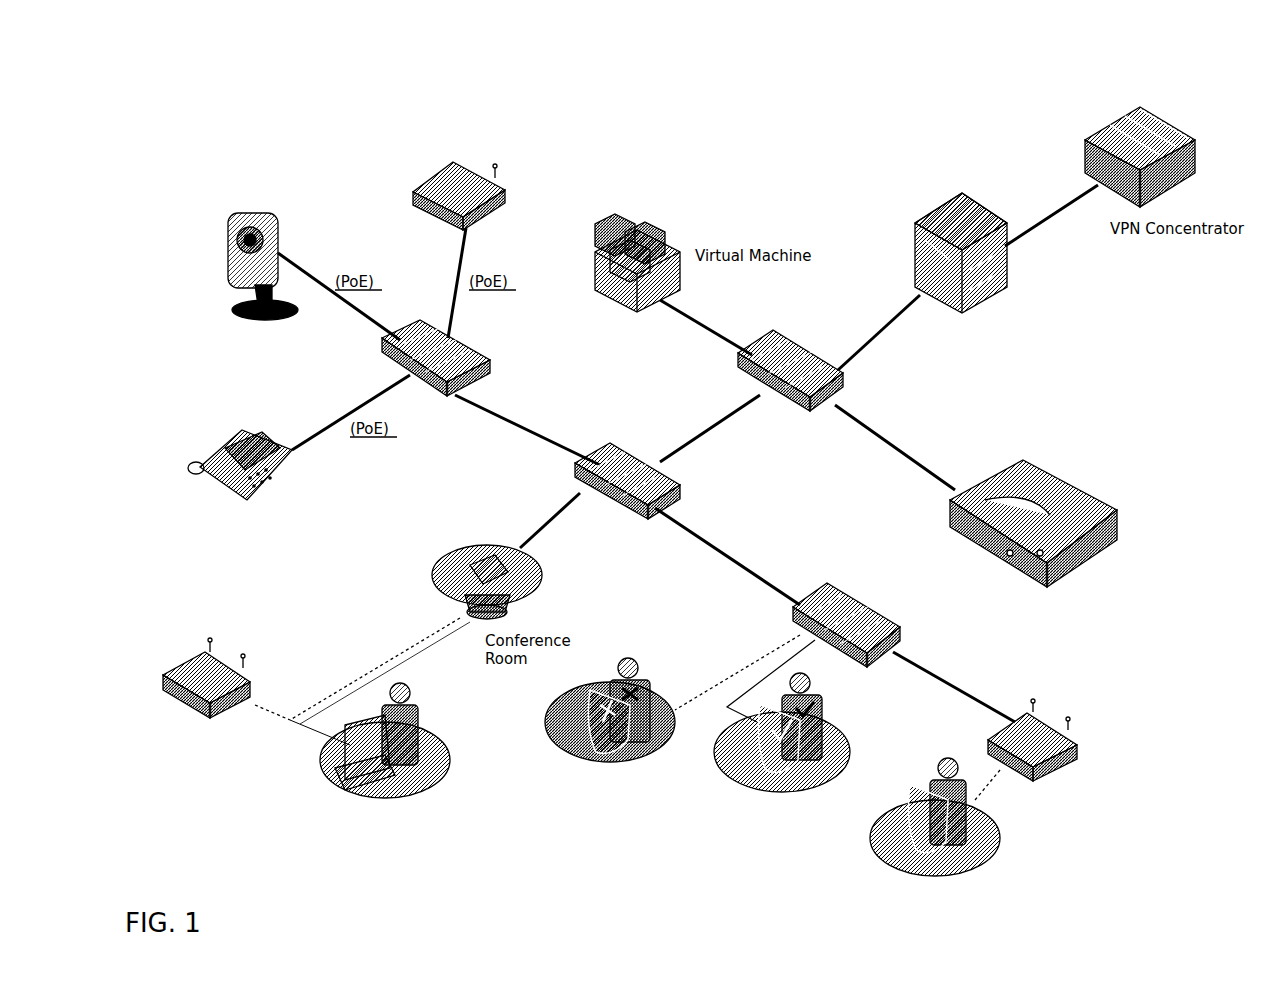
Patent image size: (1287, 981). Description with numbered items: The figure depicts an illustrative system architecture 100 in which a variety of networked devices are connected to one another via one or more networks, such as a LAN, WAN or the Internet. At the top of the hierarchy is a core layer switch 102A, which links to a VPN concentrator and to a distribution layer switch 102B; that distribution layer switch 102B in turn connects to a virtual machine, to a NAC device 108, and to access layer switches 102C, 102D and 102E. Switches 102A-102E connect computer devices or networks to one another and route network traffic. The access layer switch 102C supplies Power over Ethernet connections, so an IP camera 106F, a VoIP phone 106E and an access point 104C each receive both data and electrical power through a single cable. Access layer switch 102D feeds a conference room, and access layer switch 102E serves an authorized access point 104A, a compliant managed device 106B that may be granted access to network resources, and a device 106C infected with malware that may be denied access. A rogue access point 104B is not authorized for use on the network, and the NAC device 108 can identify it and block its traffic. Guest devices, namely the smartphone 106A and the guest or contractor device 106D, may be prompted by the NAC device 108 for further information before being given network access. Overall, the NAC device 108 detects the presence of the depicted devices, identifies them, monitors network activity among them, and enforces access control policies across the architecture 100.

The system architecture 100 is at (1050, 48).
The switch 102A is at (1070, 333).
The switch 102B is at (955, 425).
The switch 102C is at (577, 406).
The switch 102D is at (785, 531).
The switch 102E is at (990, 670).
The access point 104A is at (1110, 833).
The access point 104B is at (232, 767).
The access point 104C is at (425, 175).
The network device 106A is at (1070, 893).
The network device 106B is at (900, 783).
The network device 106C is at (650, 835).
The network device 106D is at (443, 863).
The network device 106E is at (318, 548).
The network device 106F is at (285, 362).
The Network Access Control (NAC) device 108 is at (1160, 610).